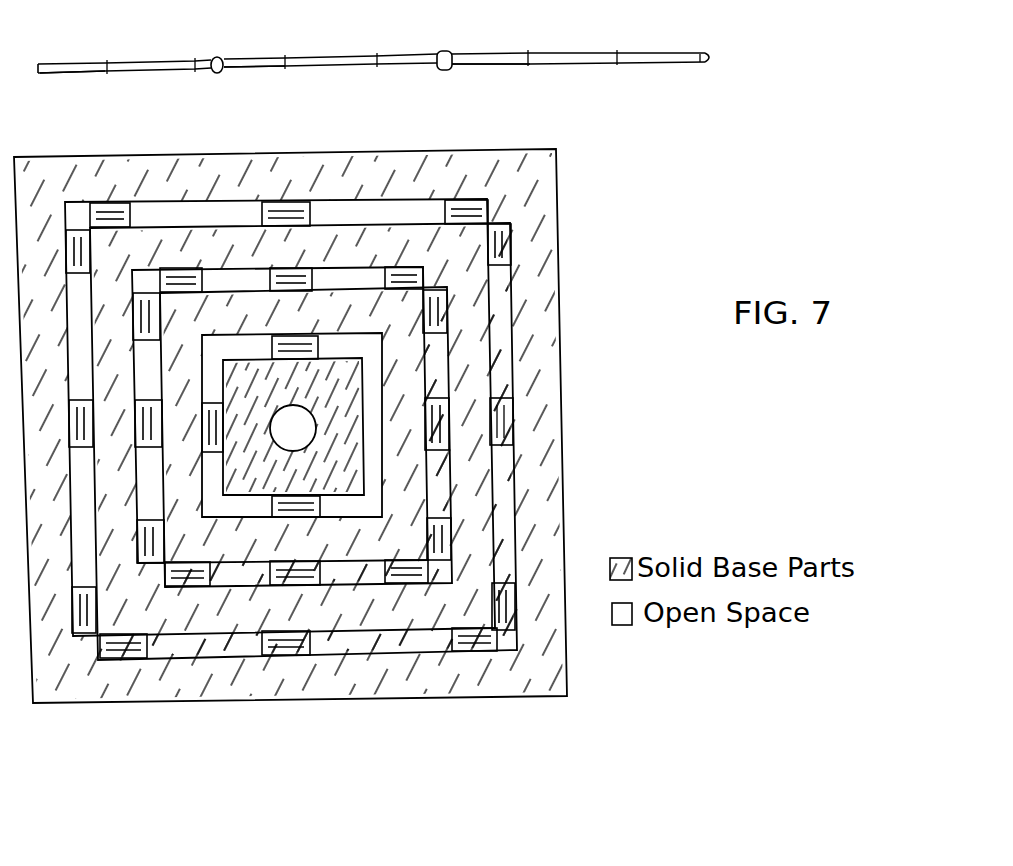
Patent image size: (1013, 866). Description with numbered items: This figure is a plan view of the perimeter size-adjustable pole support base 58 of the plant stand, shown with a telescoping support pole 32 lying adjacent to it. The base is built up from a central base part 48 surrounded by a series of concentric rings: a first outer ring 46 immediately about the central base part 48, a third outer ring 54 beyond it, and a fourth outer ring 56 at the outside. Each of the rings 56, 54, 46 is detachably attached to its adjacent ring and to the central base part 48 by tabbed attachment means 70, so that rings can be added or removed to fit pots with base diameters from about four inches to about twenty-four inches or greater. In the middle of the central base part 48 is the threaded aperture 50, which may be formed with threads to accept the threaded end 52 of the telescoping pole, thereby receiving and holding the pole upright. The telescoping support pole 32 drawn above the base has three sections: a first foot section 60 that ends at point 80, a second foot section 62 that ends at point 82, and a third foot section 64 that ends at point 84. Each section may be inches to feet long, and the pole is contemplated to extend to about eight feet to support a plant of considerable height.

The telescoping support pole 32 is at (334, 43).
The end of third foot section 84 is at (40, 63).
The third foot section of telescoping support pole 64 is at (47, 76).
The end of second foot section 82 is at (217, 59).
The second foot section of telescoping support pole 62 is at (232, 72).
The end of first foot section 80 is at (441, 51).
The first foot section of telescoping support pole 60 is at (455, 66).
The end of telescoping pole with threads 52 is at (709, 64).
The tabbed attachment means 70 is at (500, 242).
The central base part 48 is at (347, 372).
The first outer ring 46 is at (410, 412).
The threaded aperture 50 is at (317, 435).
The third outer ring 54 is at (468, 463).
The fourth outer ring 56 is at (540, 507).
The alternate style of perimeter size-adjustable pole support base 58 is at (563, 534).